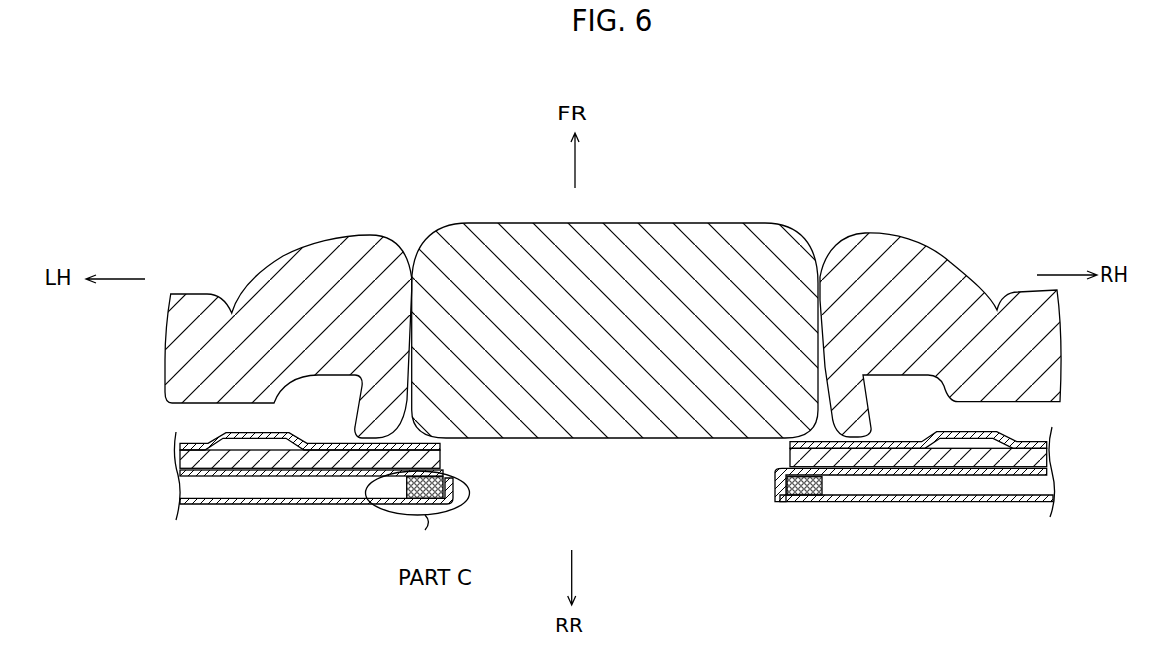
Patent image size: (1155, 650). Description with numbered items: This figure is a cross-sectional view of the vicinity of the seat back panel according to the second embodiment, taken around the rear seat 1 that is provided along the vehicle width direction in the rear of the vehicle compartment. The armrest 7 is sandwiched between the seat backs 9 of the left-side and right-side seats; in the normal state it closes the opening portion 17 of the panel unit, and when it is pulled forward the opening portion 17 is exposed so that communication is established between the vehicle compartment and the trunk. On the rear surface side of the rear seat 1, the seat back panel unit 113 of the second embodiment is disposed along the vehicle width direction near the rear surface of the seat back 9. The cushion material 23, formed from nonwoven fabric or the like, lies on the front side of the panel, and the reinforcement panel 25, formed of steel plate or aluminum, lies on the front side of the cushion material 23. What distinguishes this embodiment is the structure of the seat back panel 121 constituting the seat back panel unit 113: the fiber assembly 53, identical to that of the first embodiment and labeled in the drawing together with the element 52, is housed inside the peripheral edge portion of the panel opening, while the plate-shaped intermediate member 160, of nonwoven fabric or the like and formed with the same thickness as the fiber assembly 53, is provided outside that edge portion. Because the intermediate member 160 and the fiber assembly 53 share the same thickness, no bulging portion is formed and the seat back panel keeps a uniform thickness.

The rear seat 1 is at (664, 213).
The armrest 7 is at (498, 243).
The seat back 9 is at (917, 257).
The opening portion 17 is at (733, 490).
The cushion material 23 is at (900, 457).
The reinforcement panel 25 is at (990, 430).
The wire harness 52 is at (803, 502).
The fiber assembly 53 is at (804, 486).
The seat back panel unit 113 is at (1002, 512).
The seat back panel 121 is at (937, 503).
The intermediate member 160 is at (285, 490).